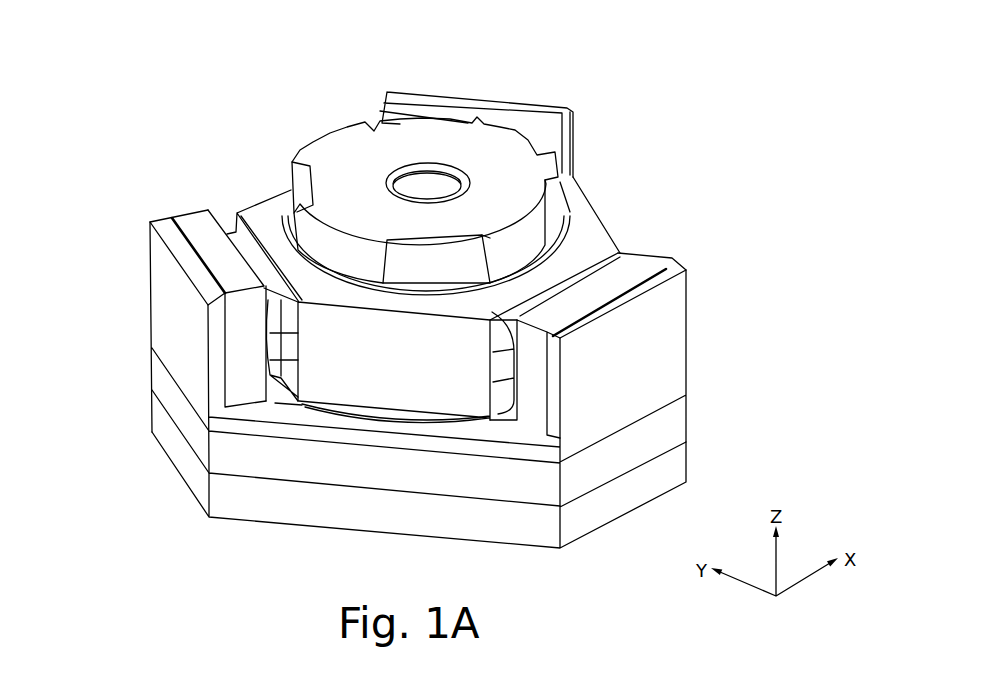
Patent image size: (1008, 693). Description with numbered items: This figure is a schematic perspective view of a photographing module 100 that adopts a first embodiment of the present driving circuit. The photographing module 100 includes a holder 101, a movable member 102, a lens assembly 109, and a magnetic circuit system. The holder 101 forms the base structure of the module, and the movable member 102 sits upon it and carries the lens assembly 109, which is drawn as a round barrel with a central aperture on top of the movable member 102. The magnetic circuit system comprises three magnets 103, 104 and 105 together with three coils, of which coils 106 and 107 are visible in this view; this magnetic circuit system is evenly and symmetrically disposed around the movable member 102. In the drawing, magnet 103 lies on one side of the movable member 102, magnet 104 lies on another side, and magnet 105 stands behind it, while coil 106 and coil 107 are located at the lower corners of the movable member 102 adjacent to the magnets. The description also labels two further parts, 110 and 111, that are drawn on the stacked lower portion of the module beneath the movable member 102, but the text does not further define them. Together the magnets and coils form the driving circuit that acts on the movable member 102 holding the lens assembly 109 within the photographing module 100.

The photographing module 100 is at (653, 107).
The holder 101 is at (177, 318).
The movable member 102 is at (580, 228).
The magnet 103 is at (208, 242).
The magnet 104 is at (624, 274).
The magnet 105 is at (433, 112).
The coil 106 is at (283, 348).
The coil 107 is at (507, 367).
The lens assembly 109 is at (322, 186).
The frame layer 110 is at (668, 430).
The base 111 is at (190, 470).